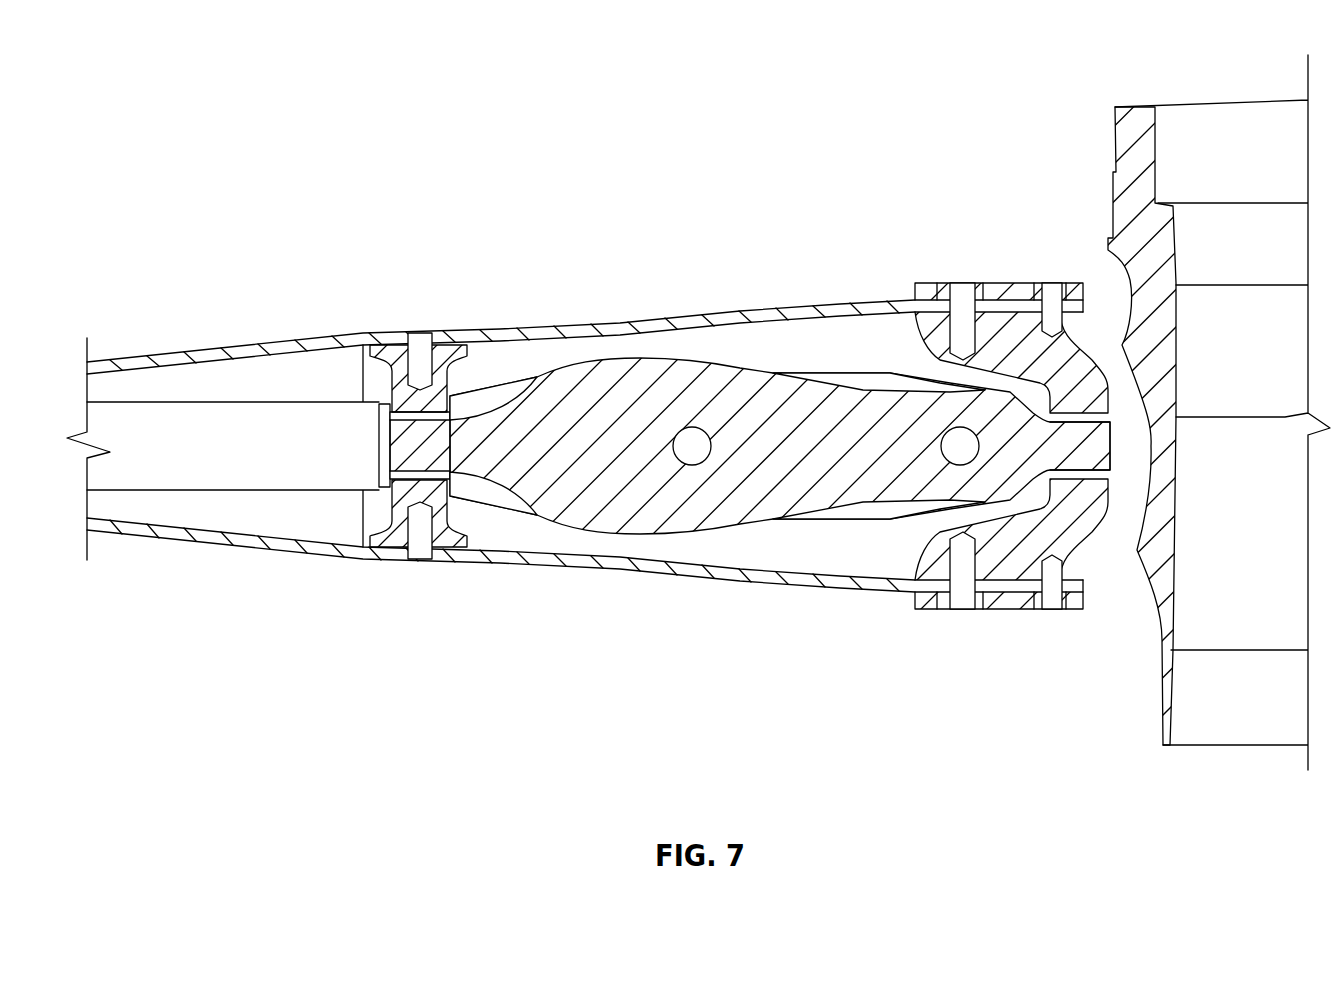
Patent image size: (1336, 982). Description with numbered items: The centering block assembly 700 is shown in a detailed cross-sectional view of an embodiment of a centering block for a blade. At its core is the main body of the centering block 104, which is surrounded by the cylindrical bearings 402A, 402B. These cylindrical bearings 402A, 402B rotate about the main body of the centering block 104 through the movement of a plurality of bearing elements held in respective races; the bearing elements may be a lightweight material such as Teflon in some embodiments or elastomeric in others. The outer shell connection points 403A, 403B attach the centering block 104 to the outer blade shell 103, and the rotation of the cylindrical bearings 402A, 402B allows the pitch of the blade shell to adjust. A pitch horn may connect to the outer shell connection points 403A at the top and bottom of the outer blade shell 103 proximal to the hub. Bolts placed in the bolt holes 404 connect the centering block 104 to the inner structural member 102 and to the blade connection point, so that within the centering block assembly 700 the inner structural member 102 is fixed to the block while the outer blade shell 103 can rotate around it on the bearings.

The centering block cross-section view 700 is at (328, 156).
The inner structural member 102 is at (232, 437).
The outer blade shell 103 is at (153, 352).
The centering block 104 is at (668, 386).
The cylindrical bearing 402A is at (1078, 505).
The cylindrical bearing 402B is at (392, 416).
The outer shell connection point 403A is at (1043, 282).
The outer shell connection point 403B is at (420, 340).
The bolt holes 404 is at (700, 447).